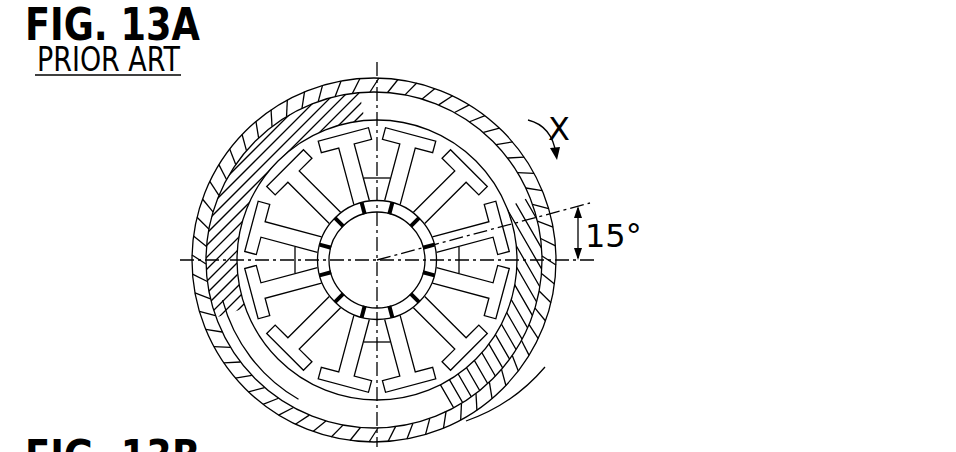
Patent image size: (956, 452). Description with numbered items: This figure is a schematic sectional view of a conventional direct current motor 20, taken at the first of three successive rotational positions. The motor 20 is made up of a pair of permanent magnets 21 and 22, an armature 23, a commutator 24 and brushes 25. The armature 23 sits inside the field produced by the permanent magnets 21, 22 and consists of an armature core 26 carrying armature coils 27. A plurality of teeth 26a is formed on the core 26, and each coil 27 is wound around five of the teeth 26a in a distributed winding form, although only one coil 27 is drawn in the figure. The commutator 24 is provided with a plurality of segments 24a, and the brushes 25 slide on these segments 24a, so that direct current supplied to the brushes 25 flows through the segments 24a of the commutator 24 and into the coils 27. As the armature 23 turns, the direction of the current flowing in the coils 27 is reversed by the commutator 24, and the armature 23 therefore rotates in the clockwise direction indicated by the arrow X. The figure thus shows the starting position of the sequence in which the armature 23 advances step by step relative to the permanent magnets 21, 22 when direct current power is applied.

The direct current motor 20 is at (409, 76).
The permanent magnet 21 is at (484, 390).
The permanent magnet 22 is at (218, 338).
The armature 23 is at (458, 165).
The commutator 24 is at (342, 130).
The segment 24a is at (300, 170).
The brush 25 is at (384, 152).
The armature core 26 is at (548, 313).
The tooth 26a is at (440, 386).
The armature coil 27 is at (528, 362).